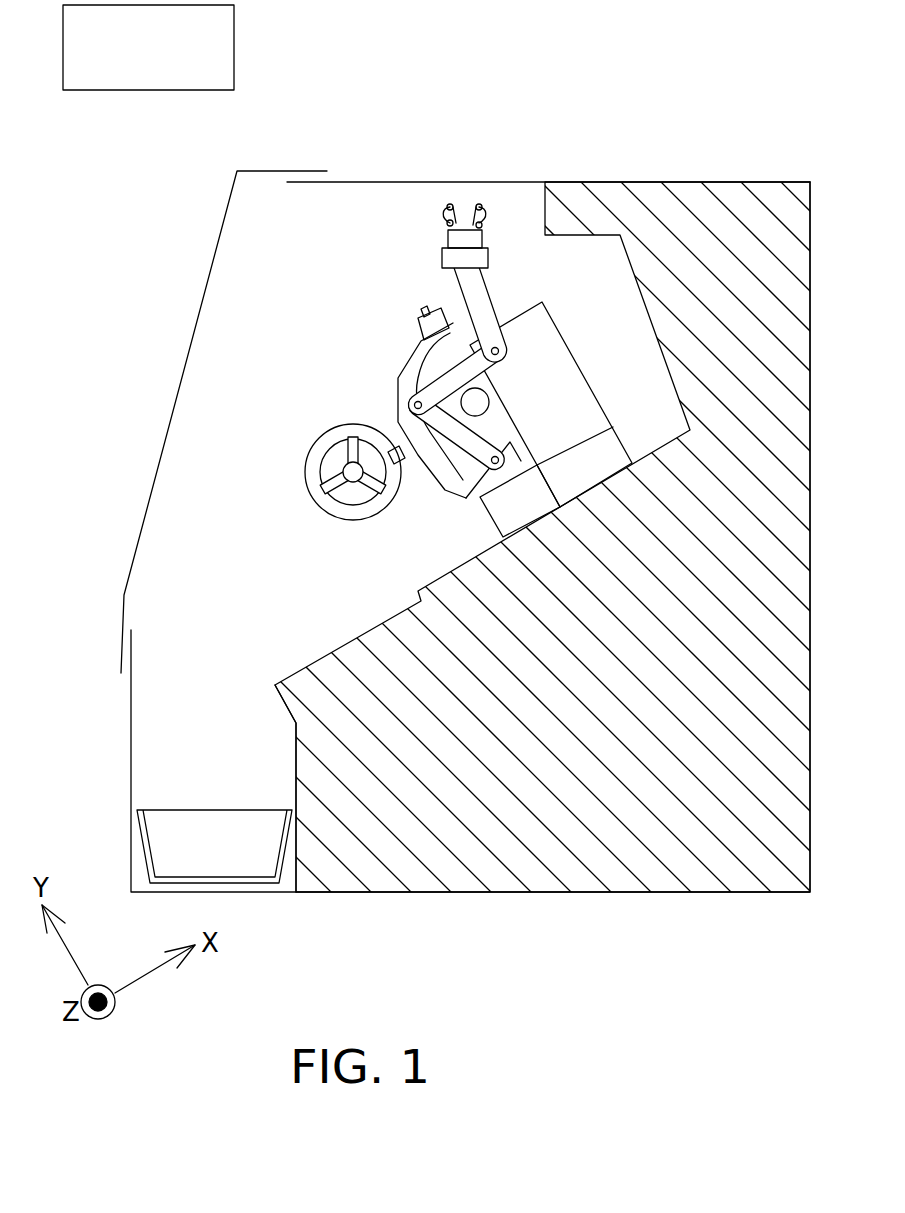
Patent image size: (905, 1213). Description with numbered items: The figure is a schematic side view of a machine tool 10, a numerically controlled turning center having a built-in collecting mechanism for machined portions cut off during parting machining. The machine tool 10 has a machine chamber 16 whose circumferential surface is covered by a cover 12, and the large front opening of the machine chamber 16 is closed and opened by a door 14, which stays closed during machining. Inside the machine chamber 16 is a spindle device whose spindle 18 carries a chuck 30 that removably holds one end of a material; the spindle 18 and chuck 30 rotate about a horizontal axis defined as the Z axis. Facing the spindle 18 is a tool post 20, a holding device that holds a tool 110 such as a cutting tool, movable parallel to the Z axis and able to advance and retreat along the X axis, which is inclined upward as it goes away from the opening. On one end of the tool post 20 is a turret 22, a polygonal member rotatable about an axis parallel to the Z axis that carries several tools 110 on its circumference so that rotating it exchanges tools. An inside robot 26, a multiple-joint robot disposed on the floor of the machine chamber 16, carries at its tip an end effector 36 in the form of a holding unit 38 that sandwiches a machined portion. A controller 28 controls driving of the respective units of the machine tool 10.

The machine tool 10 is at (736, 142).
The cover 12 is at (408, 182).
The door 14 is at (207, 280).
The machine chamber 16 is at (326, 261).
The spindle 18 is at (333, 430).
The tool post 20 is at (565, 335).
The turret 22 is at (437, 488).
The inside robot 26 is at (447, 288).
The controller 28 is at (236, 47).
The chuck 30 is at (335, 508).
The end effector 36 is at (507, 192).
The holding unit 38 is at (487, 212).
The tool 110 is at (418, 320).